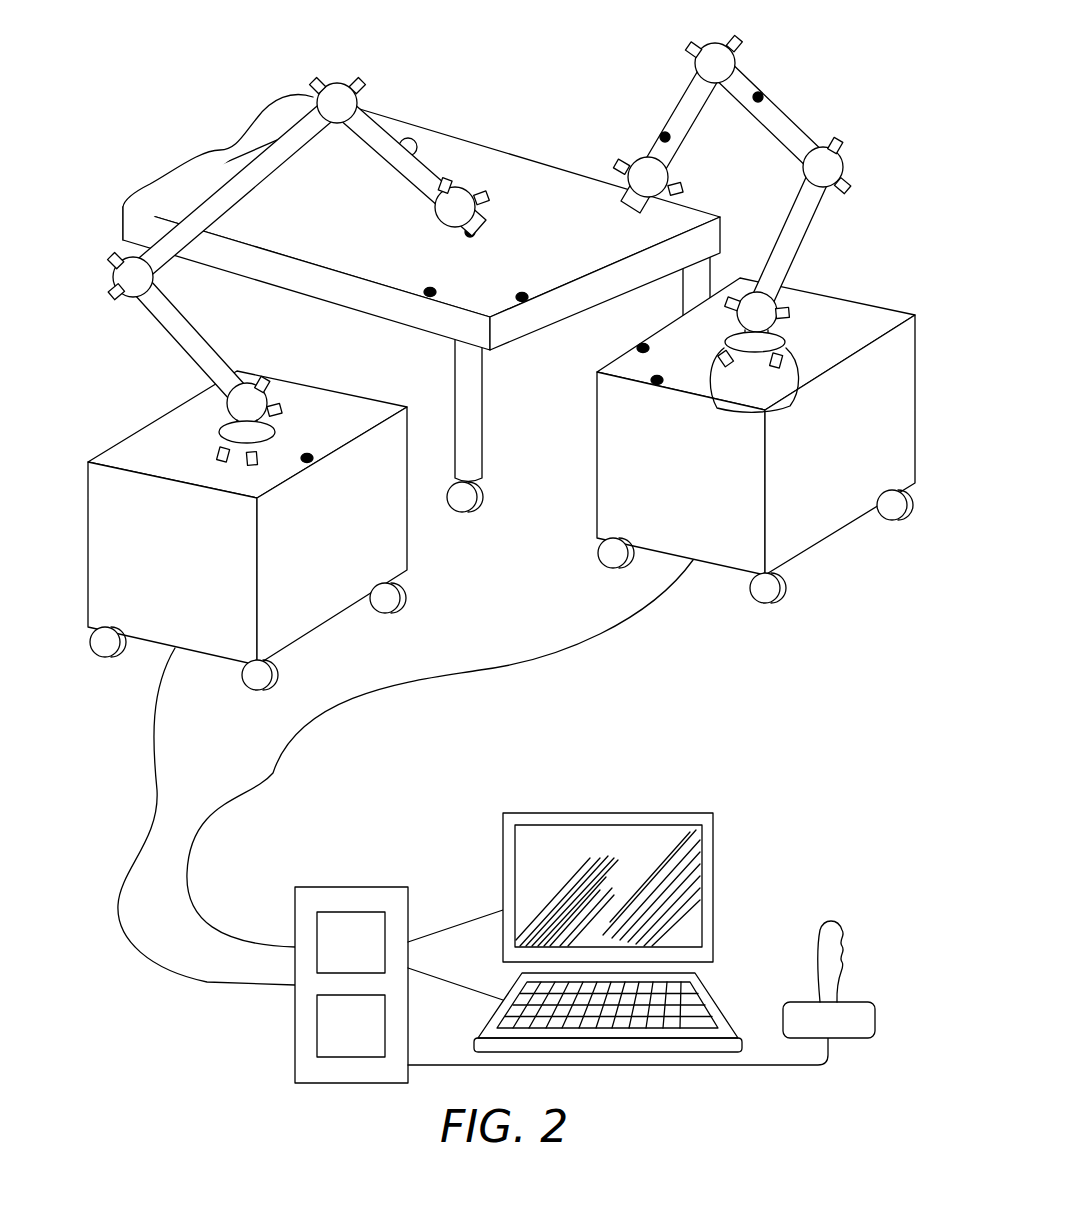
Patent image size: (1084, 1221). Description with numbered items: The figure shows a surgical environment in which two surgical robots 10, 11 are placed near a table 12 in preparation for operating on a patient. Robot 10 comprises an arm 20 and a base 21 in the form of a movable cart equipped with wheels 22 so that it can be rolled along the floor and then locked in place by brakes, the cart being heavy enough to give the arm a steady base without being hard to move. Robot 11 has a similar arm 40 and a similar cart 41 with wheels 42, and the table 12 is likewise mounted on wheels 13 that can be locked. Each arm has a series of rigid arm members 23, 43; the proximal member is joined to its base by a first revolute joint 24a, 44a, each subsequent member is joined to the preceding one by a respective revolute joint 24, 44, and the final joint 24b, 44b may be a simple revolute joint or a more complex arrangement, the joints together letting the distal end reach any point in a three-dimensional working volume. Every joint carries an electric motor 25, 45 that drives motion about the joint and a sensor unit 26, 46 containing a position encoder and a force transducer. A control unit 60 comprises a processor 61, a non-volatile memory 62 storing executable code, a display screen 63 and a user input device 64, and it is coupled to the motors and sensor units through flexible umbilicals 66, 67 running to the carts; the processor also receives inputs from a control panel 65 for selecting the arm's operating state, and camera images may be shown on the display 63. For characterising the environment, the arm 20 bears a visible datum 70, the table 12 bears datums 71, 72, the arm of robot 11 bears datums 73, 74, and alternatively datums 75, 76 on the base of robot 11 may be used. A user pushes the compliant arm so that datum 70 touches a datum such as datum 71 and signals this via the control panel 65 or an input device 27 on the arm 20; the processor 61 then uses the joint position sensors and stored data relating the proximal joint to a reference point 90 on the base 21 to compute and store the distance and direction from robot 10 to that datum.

The robot 10 is at (294, 387).
The robot 11 is at (754, 328).
The table 12 is at (421, 323).
The wheels 13 is at (464, 510).
The arm 20 is at (295, 246).
The base 21 is at (94, 528).
The wheels 22 is at (97, 657).
The rigid arm members 23 is at (272, 174).
The revolute joint 24 is at (338, 118).
The first revolute joint 24a is at (274, 432).
The final joint 24b is at (438, 212).
The electric motor 25 is at (318, 82).
The sensor unit 26 is at (360, 82).
The input device 27 is at (405, 138).
The arm 40 is at (733, 218).
The cart 41 is at (906, 396).
The wheels 42 is at (600, 554).
The rigid arm members 43 is at (681, 102).
The revolute joint 44 is at (716, 50).
The first revolute joint 44a is at (784, 342).
The final joint 44b is at (660, 172).
The electric motor 45 is at (688, 48).
The sensor unit 46 is at (742, 44).
The control unit 60 is at (482, 821).
The processor 61 is at (362, 912).
The non-volatile memory 62 is at (317, 1042).
The display screen 63 is at (713, 825).
The user input device 64 is at (846, 935).
The control panel 65 is at (712, 990).
The flexible umbilical 66 is at (116, 905).
The flexible umbilical 67 is at (188, 890).
The datum 70 is at (470, 234).
The datum 71 is at (428, 290).
The datum 72 is at (523, 295).
The datum 73 is at (660, 136).
The datum 74 is at (760, 96).
The datum 75 is at (638, 348).
The datum 76 is at (656, 384).
The reference point 90 is at (308, 460).